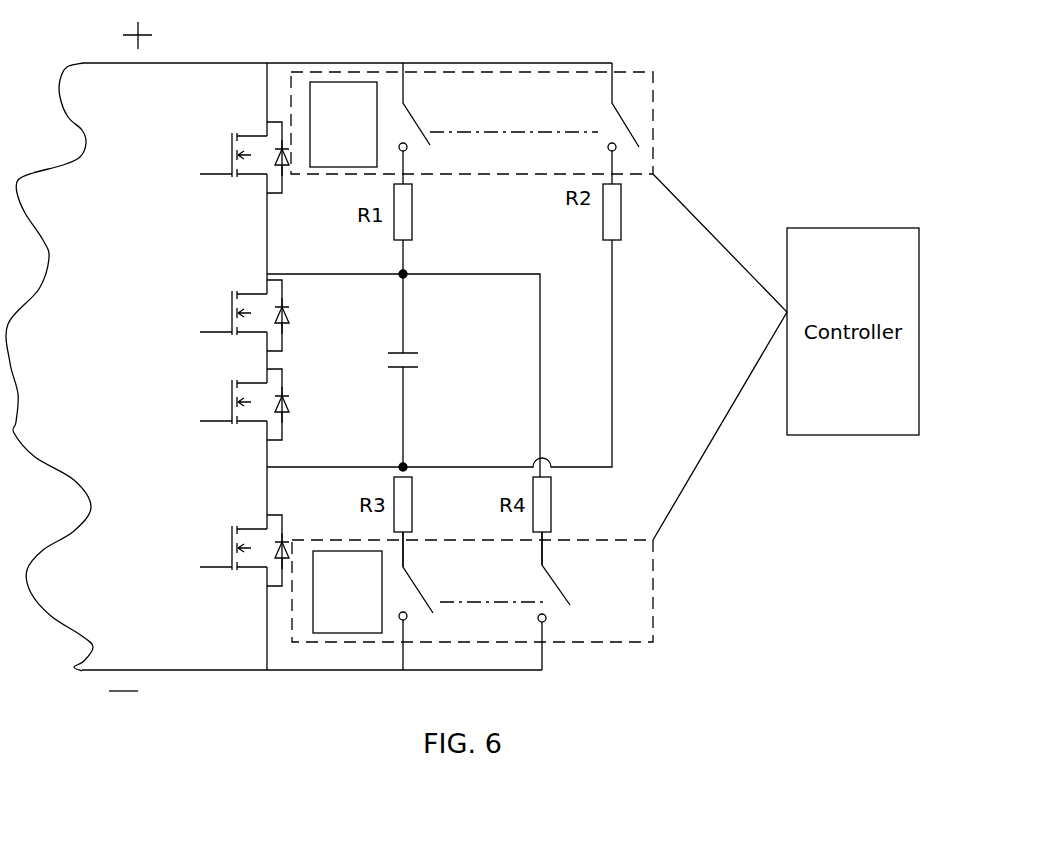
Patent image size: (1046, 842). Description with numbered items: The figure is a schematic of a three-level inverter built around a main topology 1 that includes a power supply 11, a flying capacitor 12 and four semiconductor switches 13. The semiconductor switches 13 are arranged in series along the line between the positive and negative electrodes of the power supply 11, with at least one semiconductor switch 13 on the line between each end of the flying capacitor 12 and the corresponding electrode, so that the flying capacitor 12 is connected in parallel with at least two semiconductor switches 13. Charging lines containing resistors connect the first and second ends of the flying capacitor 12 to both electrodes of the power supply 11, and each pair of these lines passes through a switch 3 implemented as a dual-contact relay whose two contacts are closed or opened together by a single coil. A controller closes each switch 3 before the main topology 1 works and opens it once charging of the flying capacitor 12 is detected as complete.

The main topology 1 is at (49, 367).
The power supply 11 is at (123, 39).
The flying capacitor 12 is at (383, 353).
The semiconductor switch 13 is at (239, 354).
The switch 3 is at (539, 352).